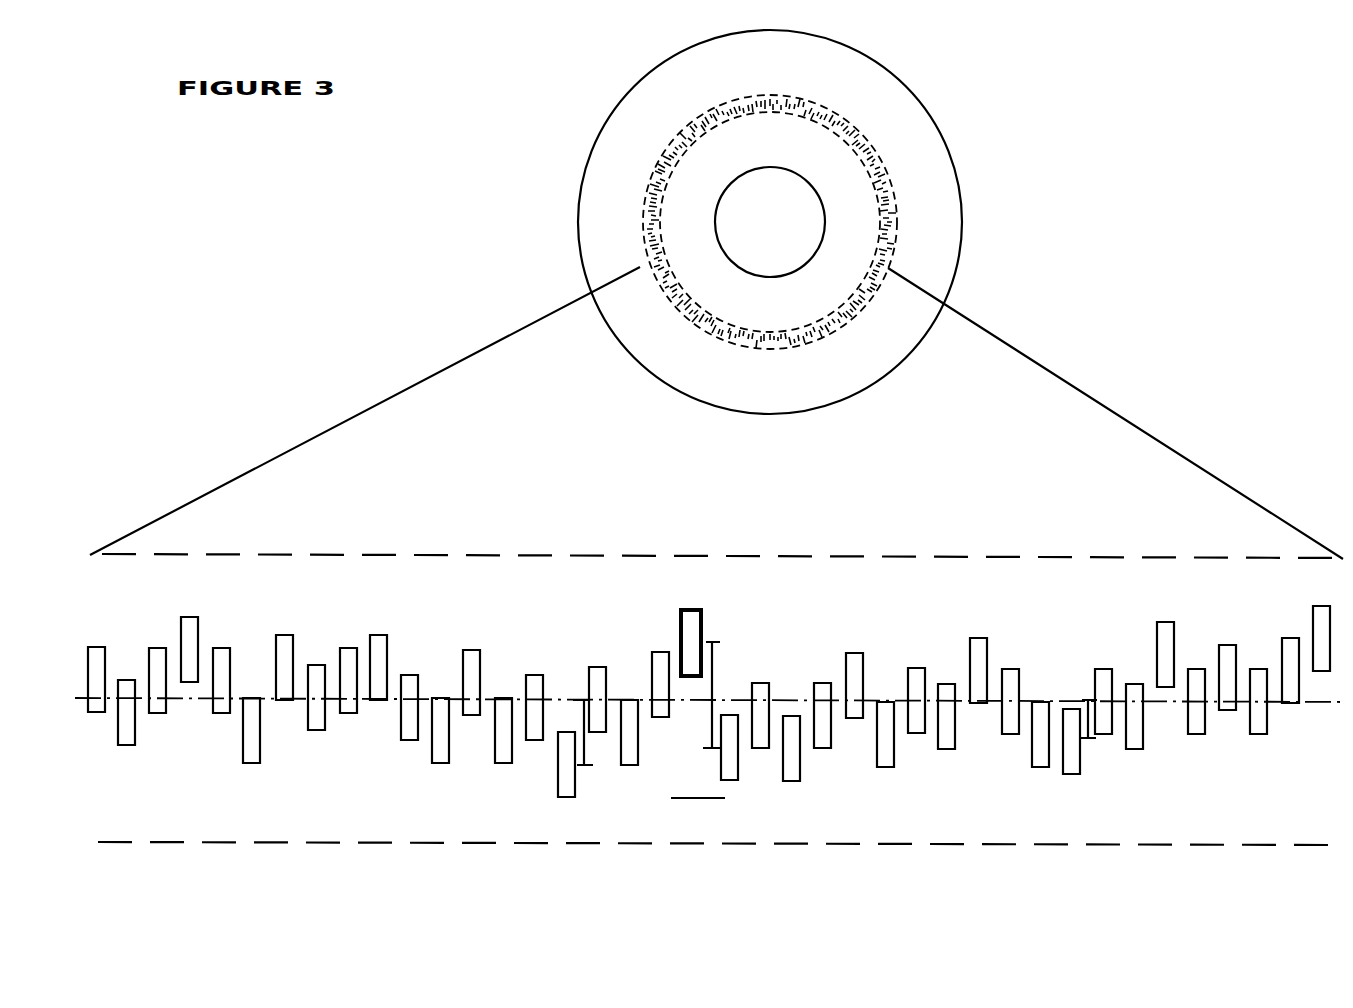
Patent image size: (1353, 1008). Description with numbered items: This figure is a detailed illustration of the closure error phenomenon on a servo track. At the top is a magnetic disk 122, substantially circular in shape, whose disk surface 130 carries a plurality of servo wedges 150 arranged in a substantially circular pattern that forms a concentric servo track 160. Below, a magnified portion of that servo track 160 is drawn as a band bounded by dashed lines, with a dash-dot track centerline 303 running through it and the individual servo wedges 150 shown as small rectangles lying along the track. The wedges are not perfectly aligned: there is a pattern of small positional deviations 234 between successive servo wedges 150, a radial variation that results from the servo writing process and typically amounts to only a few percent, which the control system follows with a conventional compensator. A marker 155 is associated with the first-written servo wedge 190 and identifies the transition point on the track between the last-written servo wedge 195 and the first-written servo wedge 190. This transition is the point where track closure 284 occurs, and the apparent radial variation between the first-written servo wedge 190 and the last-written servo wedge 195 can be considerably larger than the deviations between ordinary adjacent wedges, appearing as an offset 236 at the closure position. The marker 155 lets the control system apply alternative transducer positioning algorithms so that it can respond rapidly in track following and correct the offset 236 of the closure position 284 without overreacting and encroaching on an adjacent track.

The magnetic disk 122 is at (587, 177).
The disk surface 130 is at (603, 272).
The servo track 160 is at (653, 172).
The servo wedge 150 is at (647, 224).
The track centerline 303 is at (445, 542).
The marker 155 is at (681, 628).
The first-written servo wedge 190 is at (701, 620).
The positional deviation 234 is at (573, 700).
The offset 236 is at (715, 672).
The last-written servo wedge 195 is at (738, 767).
The track closure 284 is at (699, 798).